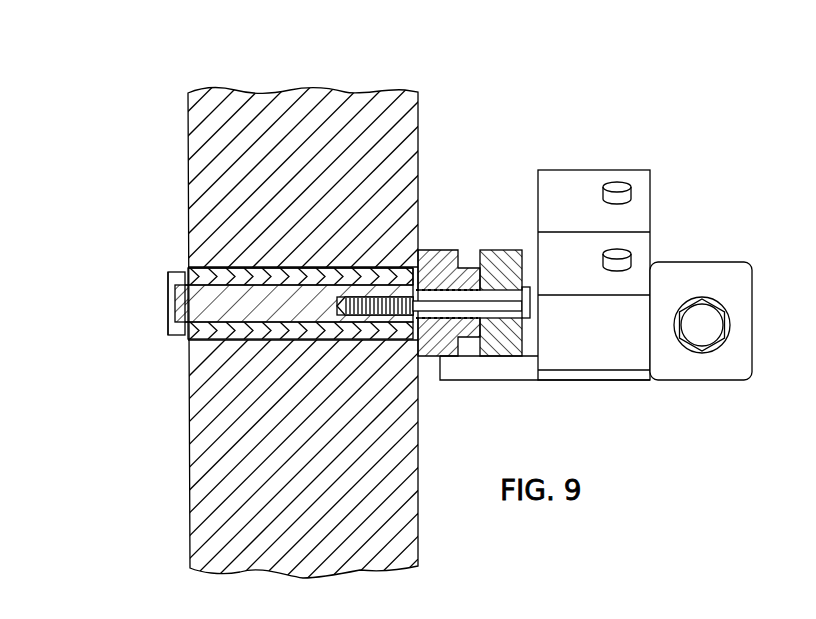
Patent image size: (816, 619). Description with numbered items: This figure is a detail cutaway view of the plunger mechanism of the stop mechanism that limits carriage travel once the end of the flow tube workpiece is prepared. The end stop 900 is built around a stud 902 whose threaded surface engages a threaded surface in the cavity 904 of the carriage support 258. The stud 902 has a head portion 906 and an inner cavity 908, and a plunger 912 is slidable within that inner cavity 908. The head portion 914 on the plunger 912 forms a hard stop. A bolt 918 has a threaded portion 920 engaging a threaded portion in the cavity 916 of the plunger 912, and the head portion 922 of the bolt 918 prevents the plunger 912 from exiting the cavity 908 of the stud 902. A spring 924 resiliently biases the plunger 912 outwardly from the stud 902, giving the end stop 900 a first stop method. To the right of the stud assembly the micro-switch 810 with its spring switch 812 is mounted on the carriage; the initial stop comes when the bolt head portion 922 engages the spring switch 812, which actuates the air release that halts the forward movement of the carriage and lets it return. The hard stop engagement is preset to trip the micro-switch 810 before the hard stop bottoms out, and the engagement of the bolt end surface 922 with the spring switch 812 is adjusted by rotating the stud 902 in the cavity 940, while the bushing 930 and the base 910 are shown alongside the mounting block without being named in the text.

The carriage support 258 is at (352, 92).
The end stop 900 is at (272, 352).
The stud 902 is at (230, 340).
The cavity 904 is at (292, 267).
The head portion 906 is at (487, 250).
The inner cavity 908 is at (170, 305).
The base 910 is at (500, 350).
The plunger 912 is at (172, 285).
The head portion 914 is at (170, 297).
The cavity 916 is at (382, 312).
The bolt 918 is at (522, 342).
The threaded portion 920 is at (362, 300).
The head portion 922 is at (520, 303).
The spring 924 is at (413, 267).
The bushing 930 is at (443, 250).
The cavity 940 is at (227, 267).
The micro-switch 810 is at (615, 170).
The spring switch 812 is at (538, 265).